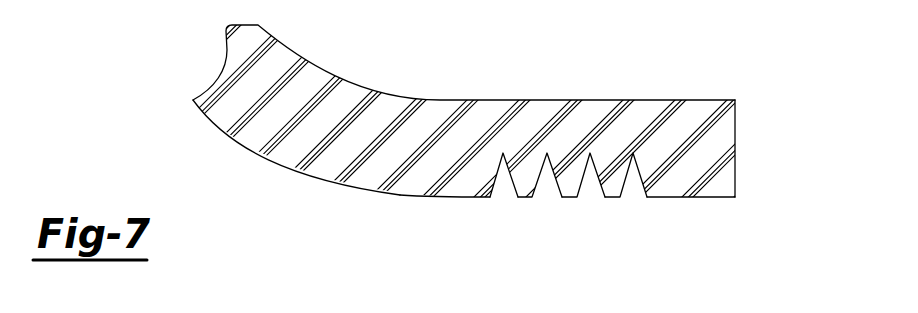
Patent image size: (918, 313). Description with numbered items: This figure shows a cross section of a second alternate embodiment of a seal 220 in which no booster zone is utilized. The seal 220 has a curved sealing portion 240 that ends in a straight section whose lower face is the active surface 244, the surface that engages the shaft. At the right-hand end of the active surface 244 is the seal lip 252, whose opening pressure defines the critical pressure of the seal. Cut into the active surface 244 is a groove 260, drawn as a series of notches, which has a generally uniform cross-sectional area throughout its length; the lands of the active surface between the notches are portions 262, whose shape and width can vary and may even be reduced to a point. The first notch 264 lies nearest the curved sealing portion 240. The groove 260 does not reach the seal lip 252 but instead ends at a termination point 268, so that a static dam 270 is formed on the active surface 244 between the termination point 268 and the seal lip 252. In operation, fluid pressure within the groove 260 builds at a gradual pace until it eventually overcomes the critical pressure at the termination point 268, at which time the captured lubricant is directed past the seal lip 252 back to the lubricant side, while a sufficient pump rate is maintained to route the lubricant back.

The seal 220 is at (647, 58).
The sealing portion 240 is at (265, 143).
The active surface 244 is at (443, 199).
The seal lip 252 is at (735, 130).
The groove 260 is at (591, 188).
The portion of active surface 262 is at (524, 200).
The first notch 264 is at (488, 201).
The termination point 268 is at (641, 199).
The static dam 270 is at (715, 198).